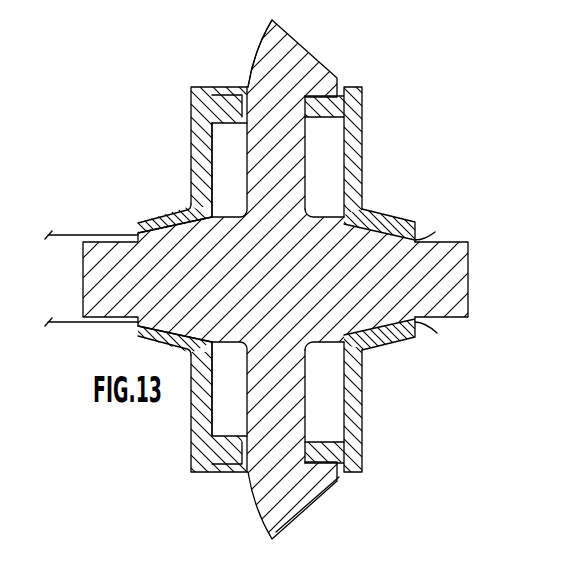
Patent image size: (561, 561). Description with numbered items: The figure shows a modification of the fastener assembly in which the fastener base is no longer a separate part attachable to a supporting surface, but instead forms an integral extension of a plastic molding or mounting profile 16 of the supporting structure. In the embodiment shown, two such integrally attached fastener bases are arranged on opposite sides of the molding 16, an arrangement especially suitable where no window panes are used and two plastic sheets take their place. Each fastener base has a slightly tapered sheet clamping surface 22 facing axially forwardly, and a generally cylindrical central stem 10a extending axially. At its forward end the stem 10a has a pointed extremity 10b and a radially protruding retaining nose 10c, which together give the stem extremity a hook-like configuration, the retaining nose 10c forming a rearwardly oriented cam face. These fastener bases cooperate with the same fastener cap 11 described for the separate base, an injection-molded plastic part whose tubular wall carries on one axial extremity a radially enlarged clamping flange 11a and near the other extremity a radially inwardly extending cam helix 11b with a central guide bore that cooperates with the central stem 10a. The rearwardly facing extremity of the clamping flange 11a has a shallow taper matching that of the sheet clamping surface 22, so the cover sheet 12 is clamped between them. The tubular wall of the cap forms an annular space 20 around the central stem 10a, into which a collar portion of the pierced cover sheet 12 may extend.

The central stem 10a is at (284, 152).
The pointed extremity 10b is at (258, 72).
The retaining nose 10c is at (298, 62).
The fastener cap 11 is at (187, 139).
The clamping flange 11a is at (357, 213).
The cam helix 11b is at (217, 113).
The cover sheet 12 is at (240, 200).
The molding or mounting profile 16 is at (170, 221).
The annular space 20 is at (322, 170).
The sheet clamping surface 22 is at (385, 242).